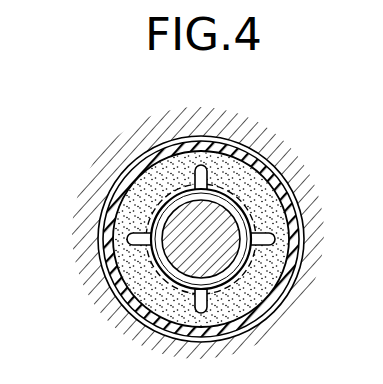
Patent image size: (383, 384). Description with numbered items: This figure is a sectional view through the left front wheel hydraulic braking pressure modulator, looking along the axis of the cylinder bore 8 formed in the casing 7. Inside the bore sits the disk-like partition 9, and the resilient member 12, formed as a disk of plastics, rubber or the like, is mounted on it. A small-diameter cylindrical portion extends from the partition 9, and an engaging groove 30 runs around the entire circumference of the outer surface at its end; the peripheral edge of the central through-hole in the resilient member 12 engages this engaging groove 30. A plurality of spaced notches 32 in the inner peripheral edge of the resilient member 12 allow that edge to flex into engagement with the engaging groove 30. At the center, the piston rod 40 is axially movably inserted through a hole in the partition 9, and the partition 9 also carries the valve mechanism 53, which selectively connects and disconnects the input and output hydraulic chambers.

The casing 7 is at (310, 240).
The cylinder bore 8 is at (124, 181).
The partition 9 is at (172, 272).
The resilient member 12 is at (268, 299).
The engaging groove 30 is at (216, 195).
The notches 32 is at (194, 179).
The piston rod 40 is at (212, 252).
The valve mechanism 53 is at (114, 240).